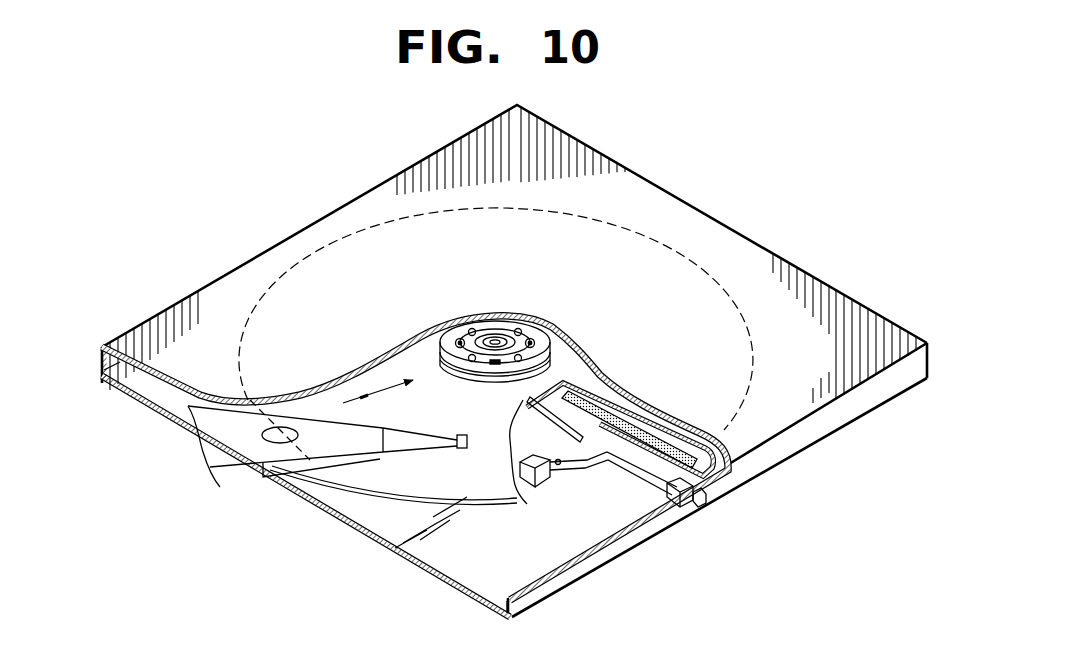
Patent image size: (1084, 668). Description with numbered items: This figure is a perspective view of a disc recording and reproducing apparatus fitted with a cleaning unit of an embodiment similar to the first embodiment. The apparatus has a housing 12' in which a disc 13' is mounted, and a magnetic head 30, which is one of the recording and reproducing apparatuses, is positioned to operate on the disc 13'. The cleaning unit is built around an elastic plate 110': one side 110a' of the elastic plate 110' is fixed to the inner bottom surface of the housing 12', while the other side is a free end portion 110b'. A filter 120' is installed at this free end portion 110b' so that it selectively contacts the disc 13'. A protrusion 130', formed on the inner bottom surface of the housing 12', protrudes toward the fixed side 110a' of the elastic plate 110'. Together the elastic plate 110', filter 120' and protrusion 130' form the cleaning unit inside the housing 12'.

The housing 12' is at (514, 365).
The disc 13' is at (357, 483).
The magnetic head 30 is at (458, 435).
The elastic plate 110' is at (613, 525).
The one side of the elastic plate 110a' is at (516, 509).
The free end portion 110b' is at (705, 538).
The filter 120' is at (671, 455).
The protrusion 130' is at (736, 533).